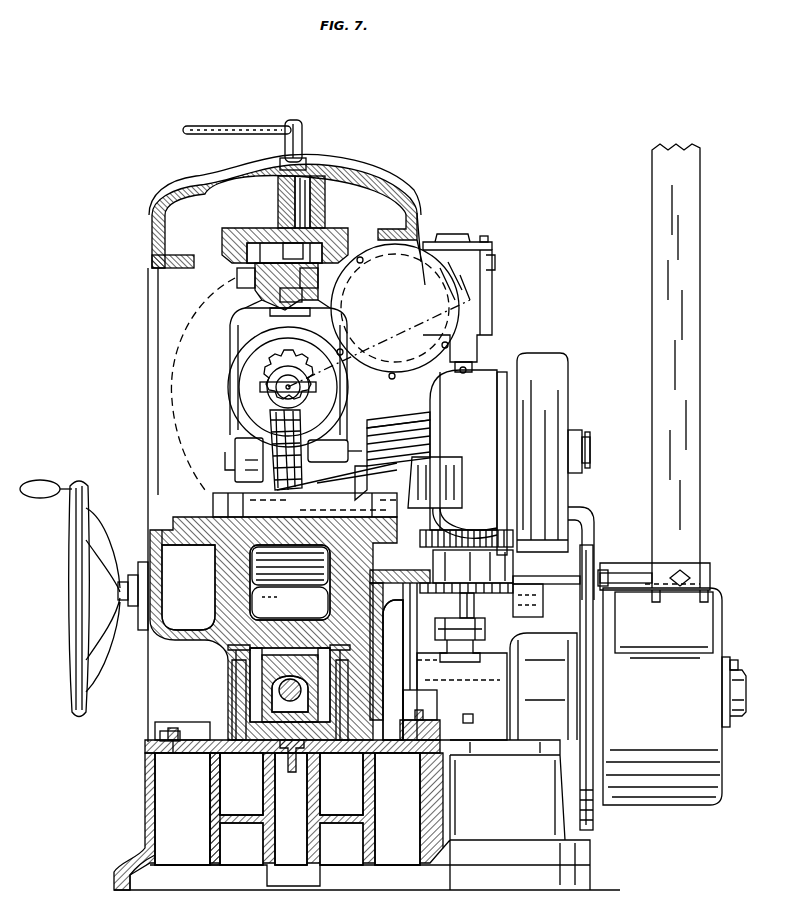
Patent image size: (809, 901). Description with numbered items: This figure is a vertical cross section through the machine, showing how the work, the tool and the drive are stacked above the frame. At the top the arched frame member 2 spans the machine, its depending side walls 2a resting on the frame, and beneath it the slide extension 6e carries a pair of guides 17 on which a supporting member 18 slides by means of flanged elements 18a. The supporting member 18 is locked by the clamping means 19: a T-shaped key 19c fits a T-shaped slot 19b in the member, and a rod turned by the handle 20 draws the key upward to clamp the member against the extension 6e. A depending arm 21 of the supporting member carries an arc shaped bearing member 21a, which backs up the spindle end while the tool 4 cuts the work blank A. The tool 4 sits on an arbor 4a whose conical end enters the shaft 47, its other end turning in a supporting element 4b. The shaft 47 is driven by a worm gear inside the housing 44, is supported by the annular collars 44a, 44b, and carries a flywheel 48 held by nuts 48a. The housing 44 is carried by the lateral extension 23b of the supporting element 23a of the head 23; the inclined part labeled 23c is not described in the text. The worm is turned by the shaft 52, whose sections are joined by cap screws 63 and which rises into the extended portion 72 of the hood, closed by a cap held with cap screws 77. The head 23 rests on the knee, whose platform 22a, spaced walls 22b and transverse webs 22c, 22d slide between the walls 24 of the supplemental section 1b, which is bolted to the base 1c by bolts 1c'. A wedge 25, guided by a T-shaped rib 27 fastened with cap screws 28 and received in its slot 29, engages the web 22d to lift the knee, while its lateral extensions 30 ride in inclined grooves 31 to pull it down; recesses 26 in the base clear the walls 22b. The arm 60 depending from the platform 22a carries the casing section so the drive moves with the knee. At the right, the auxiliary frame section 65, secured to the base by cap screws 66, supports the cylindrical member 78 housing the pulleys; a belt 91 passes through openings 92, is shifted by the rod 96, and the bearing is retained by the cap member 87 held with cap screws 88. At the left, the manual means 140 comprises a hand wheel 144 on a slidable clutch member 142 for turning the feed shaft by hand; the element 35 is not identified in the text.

The handle 20 is at (246, 128).
The clamping means 19 is at (303, 145).
The frame member 2 is at (335, 172).
The extension 6e is at (222, 250).
The flanged elements 18a is at (237, 278).
The guides 17 is at (262, 296).
The supporting member 18 is at (245, 318).
The T-shaped key 19c is at (302, 297).
The T-shaped slot 19b is at (310, 315).
The side walls 2a is at (148, 358).
The depending arm 21 is at (288, 387).
The arc shaped bearing member 21a is at (300, 378).
The work blank A is at (300, 387).
The tool 4 is at (302, 440).
The arbor 4a is at (335, 451).
The supporting element 4b is at (245, 450).
The extended portion 72 is at (492, 290).
The cap screws 77 is at (484, 240).
The shaft 52 is at (470, 360).
The housing 44 is at (466, 481).
The annular collar 44a is at (392, 428).
The annular collar 44b is at (503, 400).
The flywheel 48 is at (555, 476).
The nuts 48a is at (582, 440).
The shaft 47 is at (590, 452).
The inclined surface 23c is at (375, 450).
The lateral extension 23b is at (462, 462).
The belt 91 is at (700, 472).
The head 23 is at (228, 508).
The supporting element 23a is at (336, 496).
The platform 22a is at (160, 528).
The spaced walls 22b is at (228, 660).
The transverse web 22c is at (290, 566).
The transverse web 22d is at (290, 602).
The wedge 25 is at (290, 685).
The lateral extensions 30 is at (240, 658).
The inclined grooves 31 is at (232, 685).
The bolts 1c' is at (311, 724).
The supplemental section 1b is at (160, 712).
The base 1c is at (362, 805).
The walls 24 is at (198, 760).
The recesses 26 is at (291, 784).
The cap screws 28 is at (284, 760).
The rib 27 is at (300, 760).
The slot 29 is at (218, 795).
The manual rotating means 140 is at (74, 599).
The hand wheel 144 is at (76, 530).
The clutch member 142 is at (130, 612).
The arm 60 is at (408, 550).
The wall 35 is at (395, 661).
The cap screws 63 is at (486, 626).
The auxiliary frame section 65 is at (528, 645).
The cap screws 66 is at (500, 706).
The rod 96 is at (622, 572).
The openings 92 is at (690, 590).
The cylindrical member 78 is at (680, 800).
The cap screws 88 is at (738, 664).
The cap member 87 is at (746, 694).